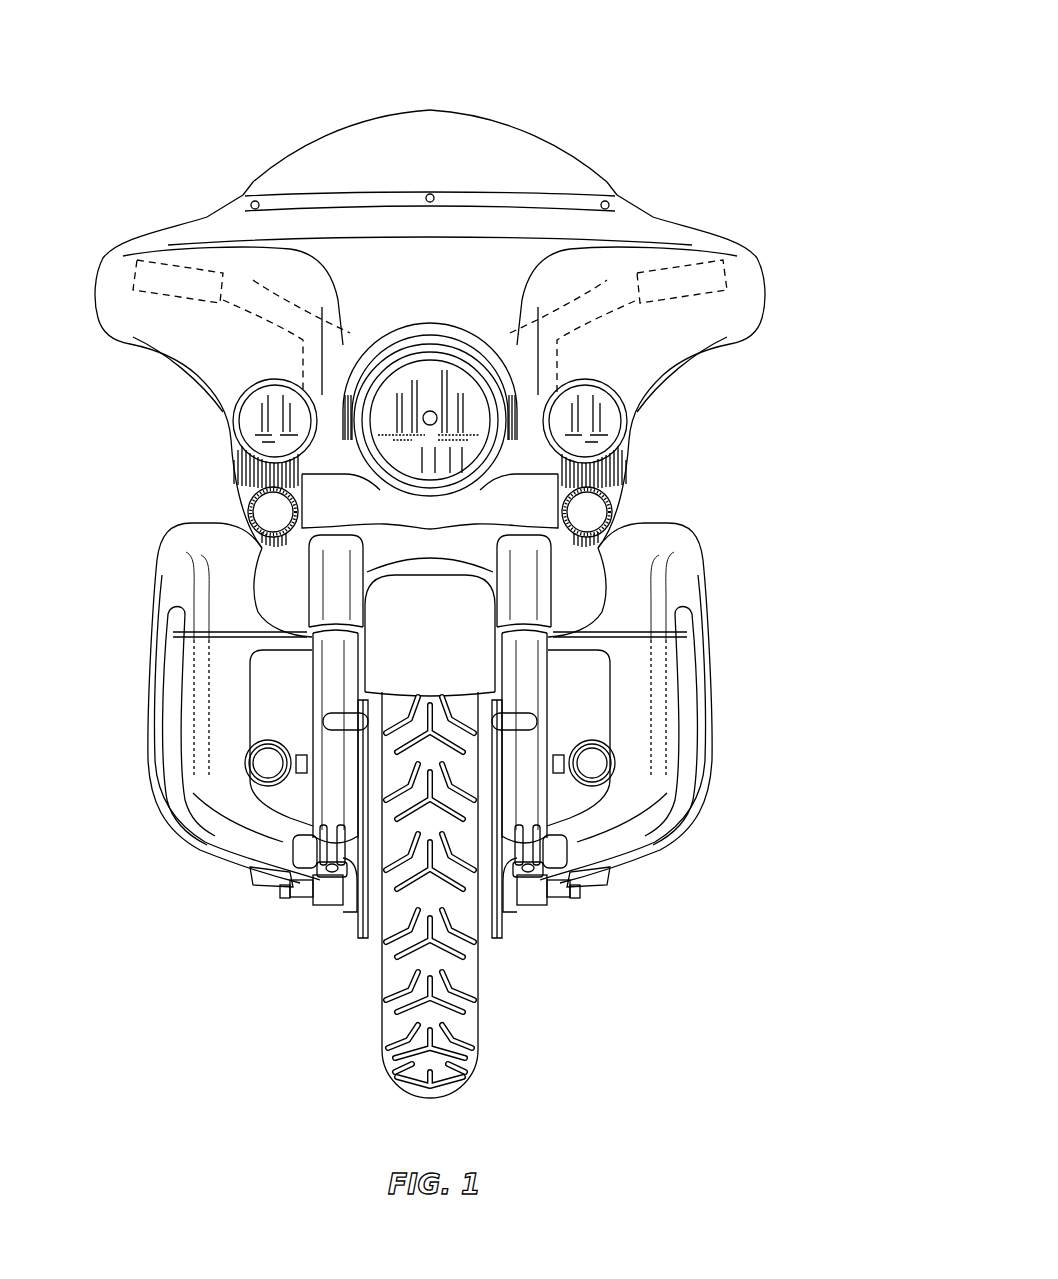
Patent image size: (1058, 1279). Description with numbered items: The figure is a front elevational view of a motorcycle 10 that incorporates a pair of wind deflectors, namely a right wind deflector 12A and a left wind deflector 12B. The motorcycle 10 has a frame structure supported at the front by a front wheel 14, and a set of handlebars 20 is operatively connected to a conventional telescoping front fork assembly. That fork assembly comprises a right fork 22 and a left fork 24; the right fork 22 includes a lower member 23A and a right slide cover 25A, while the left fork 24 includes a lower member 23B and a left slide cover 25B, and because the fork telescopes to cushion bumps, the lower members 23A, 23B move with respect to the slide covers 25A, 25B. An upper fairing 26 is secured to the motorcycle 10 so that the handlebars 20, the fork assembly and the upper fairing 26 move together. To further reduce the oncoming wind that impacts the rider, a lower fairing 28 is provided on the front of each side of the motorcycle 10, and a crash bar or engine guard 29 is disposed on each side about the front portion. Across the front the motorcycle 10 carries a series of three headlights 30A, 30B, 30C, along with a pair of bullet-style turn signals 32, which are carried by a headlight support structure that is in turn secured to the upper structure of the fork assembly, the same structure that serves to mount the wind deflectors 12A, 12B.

The motorcycle 10 is at (643, 66).
The right wind deflector 12A is at (253, 572).
The left wind deflector 12B is at (607, 594).
The front wheel 14 is at (450, 1033).
The handlebars 20 is at (253, 280).
The right fork 22 is at (288, 678).
The lower member 23A is at (333, 778).
The lower member 23B is at (527, 777).
The left fork 24 is at (560, 672).
The right slide cover 25A is at (332, 578).
The left slide cover 25B is at (527, 577).
The upper fairing 26 is at (710, 318).
The lower fairing 28 is at (207, 752).
The crash bar or engine guard 29 is at (203, 831).
The headlight 30A is at (277, 430).
The headlight 30B is at (458, 398).
The headlight 30C is at (598, 417).
The bullet-style turn signals 32 is at (270, 510).